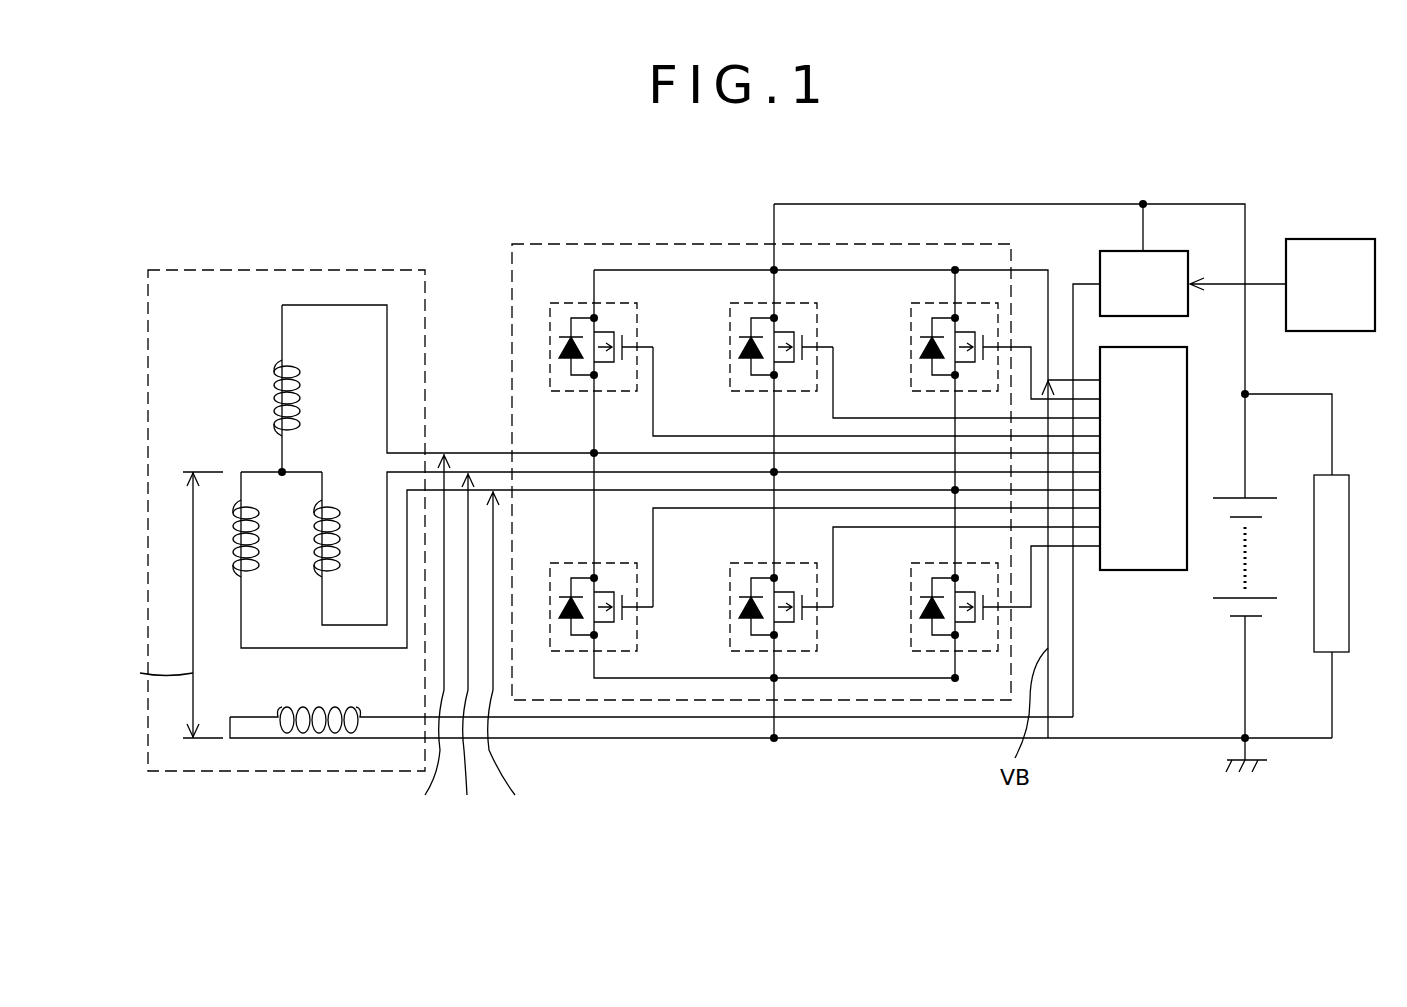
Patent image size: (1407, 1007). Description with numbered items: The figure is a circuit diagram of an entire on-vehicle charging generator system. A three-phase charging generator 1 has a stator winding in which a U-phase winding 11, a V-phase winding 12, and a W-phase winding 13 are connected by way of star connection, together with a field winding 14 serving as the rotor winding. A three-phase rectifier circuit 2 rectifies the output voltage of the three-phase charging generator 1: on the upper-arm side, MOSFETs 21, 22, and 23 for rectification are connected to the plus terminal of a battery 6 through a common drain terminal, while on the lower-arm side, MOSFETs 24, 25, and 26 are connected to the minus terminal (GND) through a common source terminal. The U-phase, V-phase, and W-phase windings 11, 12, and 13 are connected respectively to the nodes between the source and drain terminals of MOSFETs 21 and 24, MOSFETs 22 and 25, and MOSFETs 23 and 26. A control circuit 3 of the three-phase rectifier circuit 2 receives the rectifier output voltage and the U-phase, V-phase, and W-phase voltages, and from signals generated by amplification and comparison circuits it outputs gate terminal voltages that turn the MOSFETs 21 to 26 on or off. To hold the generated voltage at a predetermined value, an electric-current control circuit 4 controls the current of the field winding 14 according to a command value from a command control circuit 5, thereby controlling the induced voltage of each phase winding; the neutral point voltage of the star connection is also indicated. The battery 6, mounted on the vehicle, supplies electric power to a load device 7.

The three-phase charging generator 1 is at (340, 282).
The three-phase rectifier circuit 2 is at (692, 254).
The control circuit 3 is at (1120, 553).
The electric-current control circuit 4 is at (1100, 270).
The command control circuit 5 is at (1328, 247).
The battery 6 is at (1222, 565).
The load device 7 is at (1340, 548).
The U-phase winding 11 is at (272, 393).
The V-phase winding 12 is at (331, 528).
The W-phase winding 13 is at (240, 548).
The field winding 14 is at (300, 710).
The MOSFET 21 is at (558, 312).
The MOSFET 22 is at (734, 380).
The MOSFET 23 is at (914, 380).
The MOSFET 24 is at (558, 570).
The MOSFET 25 is at (734, 578).
The MOSFET 26 is at (914, 578).